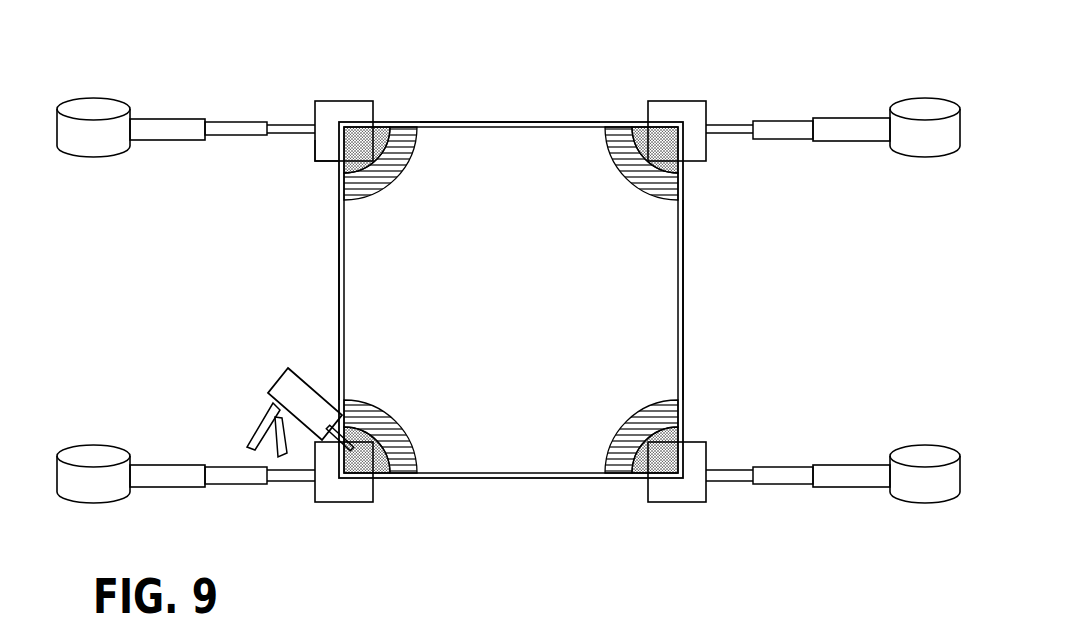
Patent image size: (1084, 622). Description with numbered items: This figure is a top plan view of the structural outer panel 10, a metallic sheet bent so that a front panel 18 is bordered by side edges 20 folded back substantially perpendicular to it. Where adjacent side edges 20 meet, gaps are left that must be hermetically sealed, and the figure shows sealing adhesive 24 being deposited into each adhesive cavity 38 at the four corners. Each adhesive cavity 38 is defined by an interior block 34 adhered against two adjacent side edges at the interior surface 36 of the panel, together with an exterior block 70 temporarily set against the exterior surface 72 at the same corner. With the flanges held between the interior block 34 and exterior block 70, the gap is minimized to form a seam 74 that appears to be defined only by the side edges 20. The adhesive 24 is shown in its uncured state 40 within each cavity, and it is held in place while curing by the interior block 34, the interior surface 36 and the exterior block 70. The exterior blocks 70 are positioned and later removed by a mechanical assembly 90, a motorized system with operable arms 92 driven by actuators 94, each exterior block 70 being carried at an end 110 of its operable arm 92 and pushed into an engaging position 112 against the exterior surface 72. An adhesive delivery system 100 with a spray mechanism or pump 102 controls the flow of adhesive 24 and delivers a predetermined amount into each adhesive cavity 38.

The structural outer panel 10 is at (515, 77).
The front panel 18 is at (620, 280).
The side edges 20 is at (341, 272).
The sealing adhesive 24 is at (344, 196).
The interior blocks 34 is at (405, 133).
The interior surface 36 is at (497, 124).
The adhesive cavity 38 is at (372, 457).
The uncured state 40 is at (679, 181).
The exterior blocks 70 is at (333, 112).
The exterior surface 72 is at (683, 315).
The seam 74 is at (688, 113).
The mechanical assembly 90 is at (180, 120).
The operable arms 92 is at (160, 128).
The actuators 94 is at (92, 133).
The adhesive delivery system 100 is at (248, 389).
The spray mechanism or pump 102 is at (286, 393).
The end of operable arm 110 is at (292, 124).
The engaging position 112 is at (310, 165).